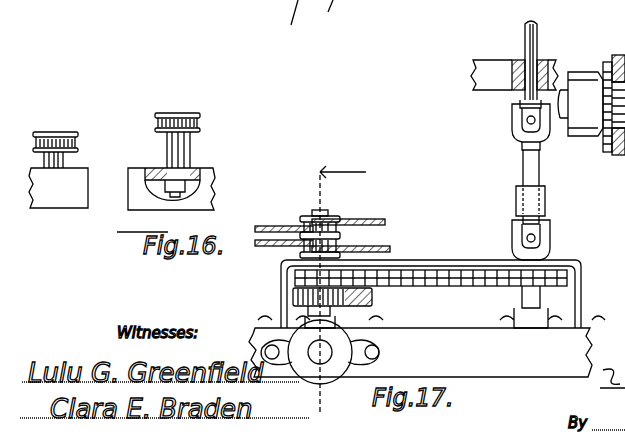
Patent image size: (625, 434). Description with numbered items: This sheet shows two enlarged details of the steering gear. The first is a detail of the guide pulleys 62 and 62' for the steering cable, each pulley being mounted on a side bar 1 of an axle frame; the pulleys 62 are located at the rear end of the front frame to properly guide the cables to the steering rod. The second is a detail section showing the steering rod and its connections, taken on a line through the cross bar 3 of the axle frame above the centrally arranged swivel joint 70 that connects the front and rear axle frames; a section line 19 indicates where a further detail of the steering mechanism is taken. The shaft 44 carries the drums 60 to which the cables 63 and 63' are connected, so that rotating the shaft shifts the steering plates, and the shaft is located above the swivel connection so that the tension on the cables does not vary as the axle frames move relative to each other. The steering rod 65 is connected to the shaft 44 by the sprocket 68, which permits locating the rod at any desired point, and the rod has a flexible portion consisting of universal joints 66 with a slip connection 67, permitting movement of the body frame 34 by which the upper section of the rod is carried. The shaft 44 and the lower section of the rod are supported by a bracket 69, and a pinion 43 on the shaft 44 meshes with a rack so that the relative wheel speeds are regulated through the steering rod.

In FIG. 16, the side bars 1 is at (224, 190).
In FIG. 17, the cross bar 3 is at (420, 352).
In FIG. 17, the section line 19— 19 is at (338, 284).
In FIG. 17, the body frame 34 is at (489, 60).
In FIG. 17, the pinion 43 is at (293, 292).
In FIG. 17, the shaft 44 is at (372, 296).
In FIG. 17, the drums 60 is at (330, 222).
In FIG. 16, the guide pulley 62 is at (185, 156).
In FIG. 16, the guide pulley 62' is at (71, 161).
In FIG. 17, the cable 63 is at (332, 217).
In FIG. 17, the cable 63' is at (343, 241).
In FIG. 17, the steering rod 65 is at (540, 34).
In FIG. 17, the universal joints 66 is at (520, 218).
In FIG. 17, the slip connection 67 is at (540, 188).
In FIG. 17, the sprocket 68 is at (431, 287).
In FIG. 17, the bracket 69 is at (581, 276).
In FIG. 17, the swivel joint 70 is at (332, 368).